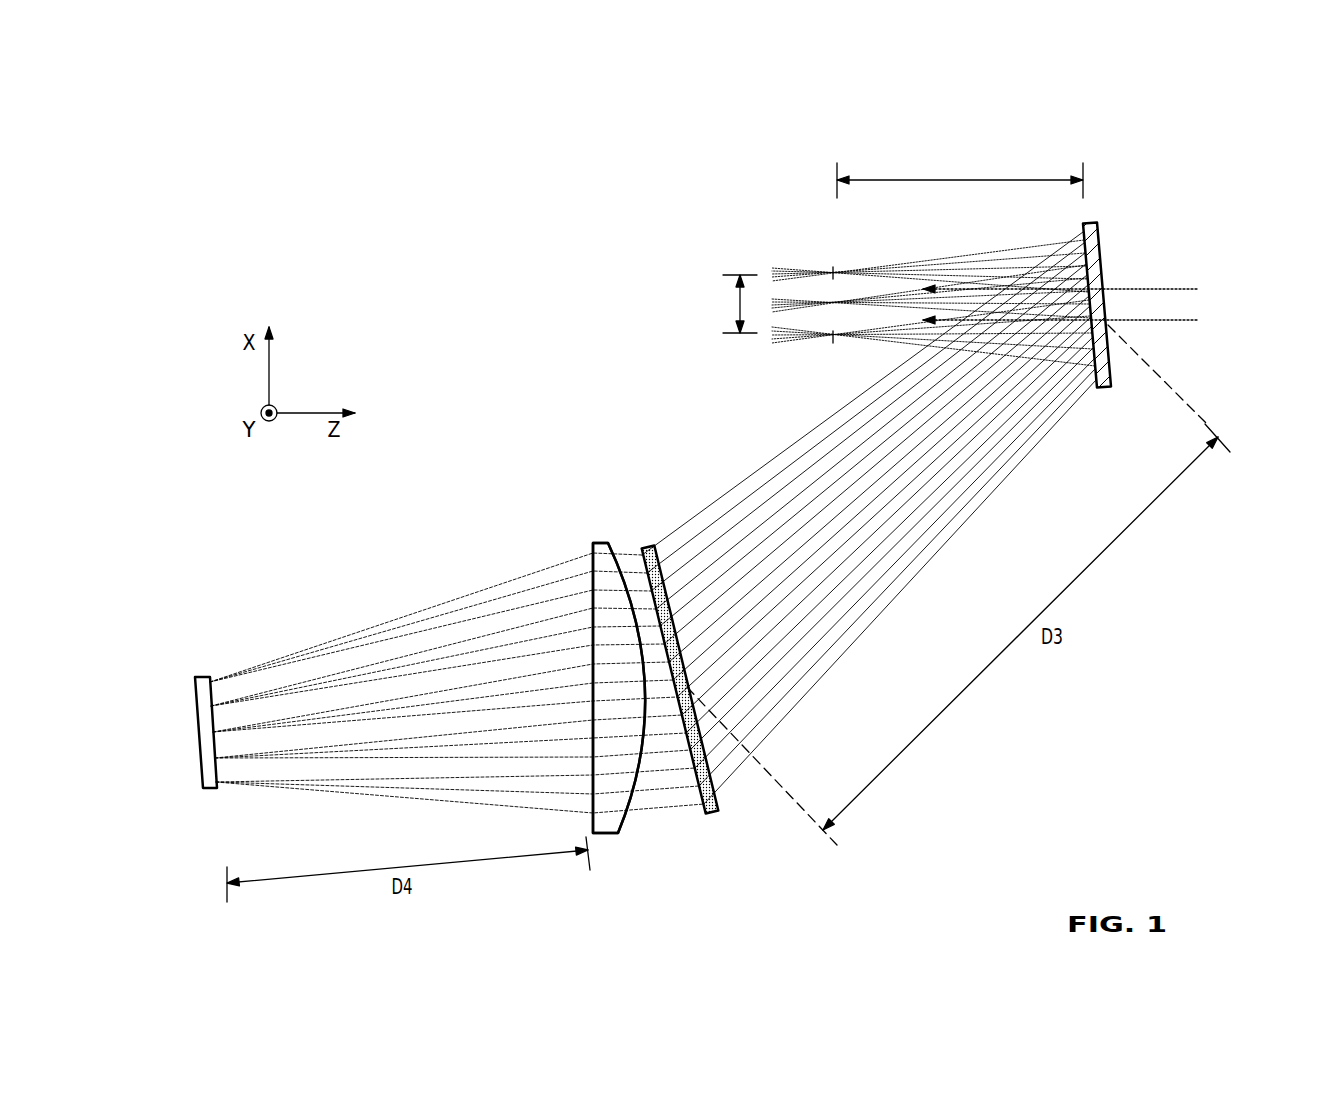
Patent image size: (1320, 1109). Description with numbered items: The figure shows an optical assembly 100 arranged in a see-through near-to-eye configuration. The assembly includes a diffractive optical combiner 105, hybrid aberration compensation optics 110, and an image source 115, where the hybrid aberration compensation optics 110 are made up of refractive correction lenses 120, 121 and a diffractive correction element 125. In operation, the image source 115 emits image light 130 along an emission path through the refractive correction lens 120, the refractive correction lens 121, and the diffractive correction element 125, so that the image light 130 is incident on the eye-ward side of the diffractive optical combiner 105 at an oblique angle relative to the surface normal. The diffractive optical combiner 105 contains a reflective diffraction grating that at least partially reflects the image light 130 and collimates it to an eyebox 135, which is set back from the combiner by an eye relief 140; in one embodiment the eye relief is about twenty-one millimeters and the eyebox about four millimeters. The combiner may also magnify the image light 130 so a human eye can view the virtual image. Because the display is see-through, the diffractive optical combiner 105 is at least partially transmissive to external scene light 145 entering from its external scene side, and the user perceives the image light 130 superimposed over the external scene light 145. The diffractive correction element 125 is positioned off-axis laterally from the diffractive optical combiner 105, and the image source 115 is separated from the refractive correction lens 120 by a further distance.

The optical assembly 100 is at (347, 213).
The diffractive optical combiner 105 is at (1100, 240).
The hybrid aberration compensation optics 110 is at (641, 651).
The image source 115 is at (200, 677).
The refractive correction lens 120 is at (592, 608).
The refractive correction lens 121 is at (623, 832).
The diffractive correction element 125 is at (715, 813).
The image light 130 is at (863, 260).
The eyebox 135 is at (738, 311).
The eye relief 140 is at (870, 180).
The external scene light 145 is at (1165, 289).